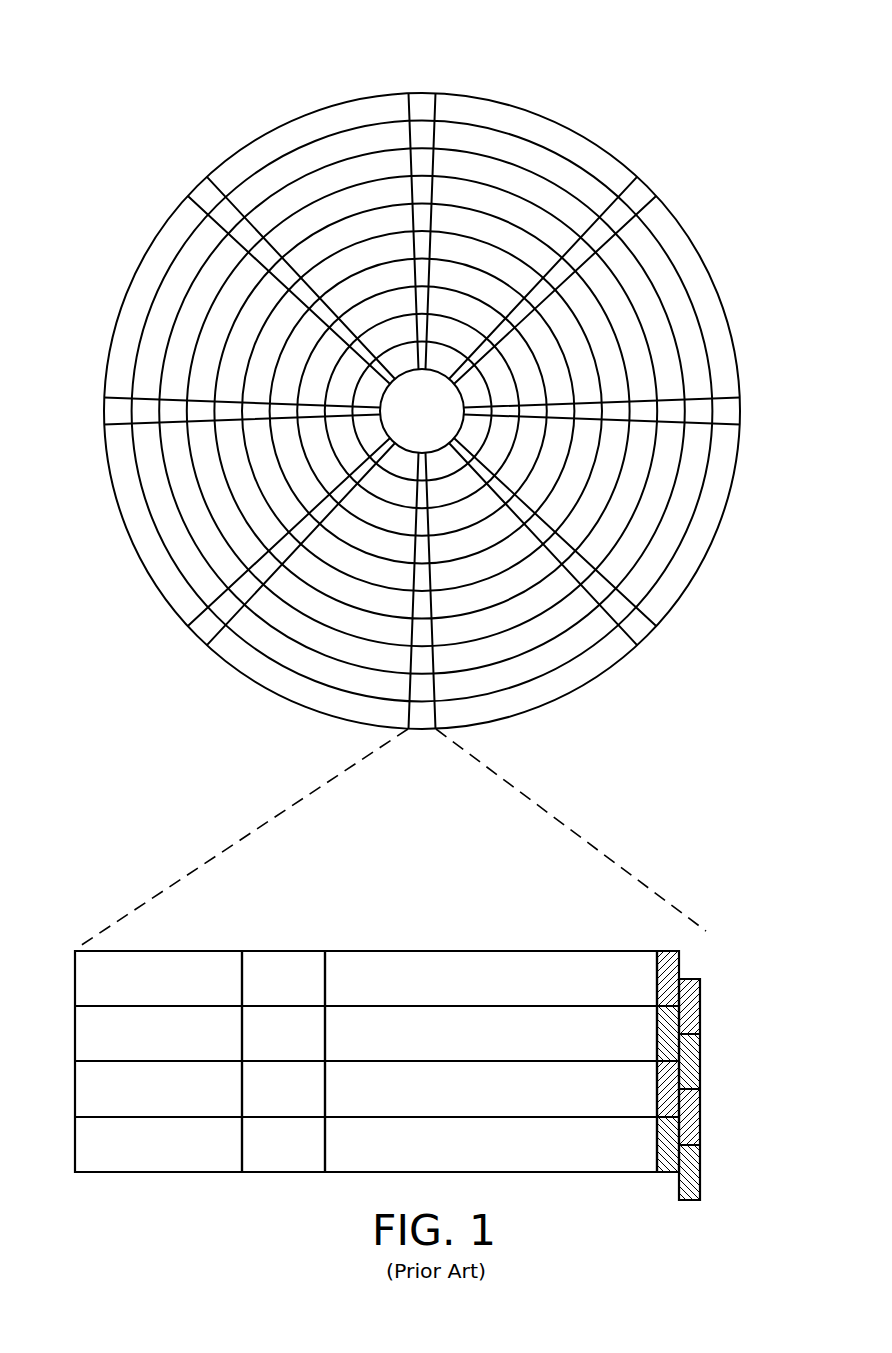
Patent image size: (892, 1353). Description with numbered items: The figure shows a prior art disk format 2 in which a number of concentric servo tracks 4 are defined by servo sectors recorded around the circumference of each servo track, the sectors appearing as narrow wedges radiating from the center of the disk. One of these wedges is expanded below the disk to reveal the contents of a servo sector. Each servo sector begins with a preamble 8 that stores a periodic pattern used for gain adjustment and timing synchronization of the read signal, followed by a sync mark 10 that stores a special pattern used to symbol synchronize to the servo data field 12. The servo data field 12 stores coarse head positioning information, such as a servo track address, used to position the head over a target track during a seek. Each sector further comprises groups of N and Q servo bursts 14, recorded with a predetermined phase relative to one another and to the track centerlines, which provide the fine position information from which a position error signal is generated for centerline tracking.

The disk format 2 is at (190, 97).
The servo track 4 is at (530, 157).
The preamble 8 is at (166, 950).
The sync mark 10 is at (285, 950).
The servo data field 12 is at (478, 950).
The servo bursts 14 is at (690, 948).